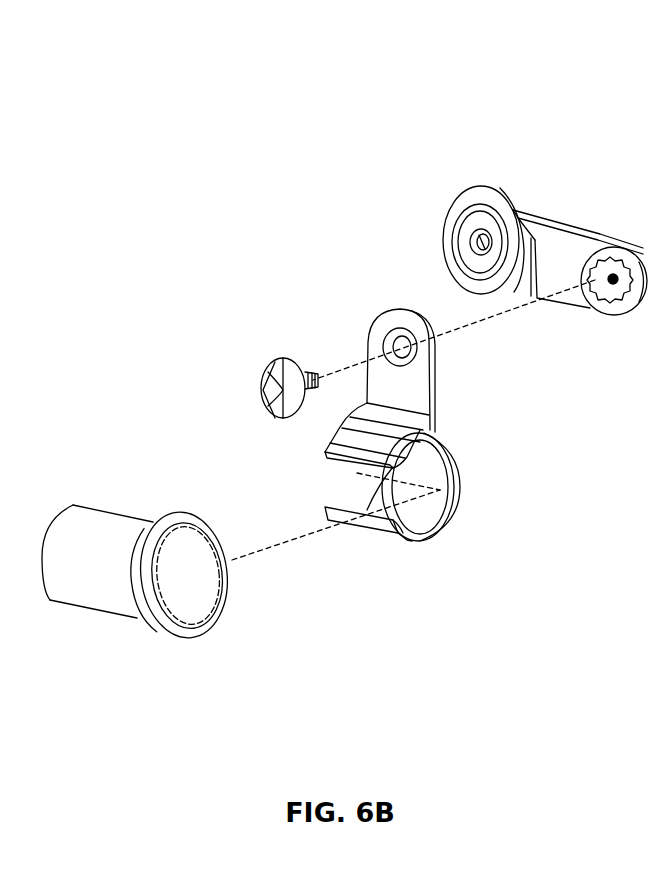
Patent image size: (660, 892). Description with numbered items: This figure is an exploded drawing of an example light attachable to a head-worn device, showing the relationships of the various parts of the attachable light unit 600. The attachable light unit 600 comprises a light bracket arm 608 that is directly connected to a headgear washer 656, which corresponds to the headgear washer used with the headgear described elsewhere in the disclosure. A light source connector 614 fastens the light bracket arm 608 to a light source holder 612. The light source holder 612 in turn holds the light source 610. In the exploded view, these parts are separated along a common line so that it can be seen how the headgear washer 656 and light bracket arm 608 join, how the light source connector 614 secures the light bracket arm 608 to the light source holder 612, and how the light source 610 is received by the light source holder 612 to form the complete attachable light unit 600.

The attachable light unit 600 is at (259, 70).
The headgear washer 656 is at (424, 212).
The light bracket arm 608 is at (580, 229).
The light source connector 614 is at (250, 370).
The light source holder 612 is at (460, 428).
The light source 610 is at (138, 486).